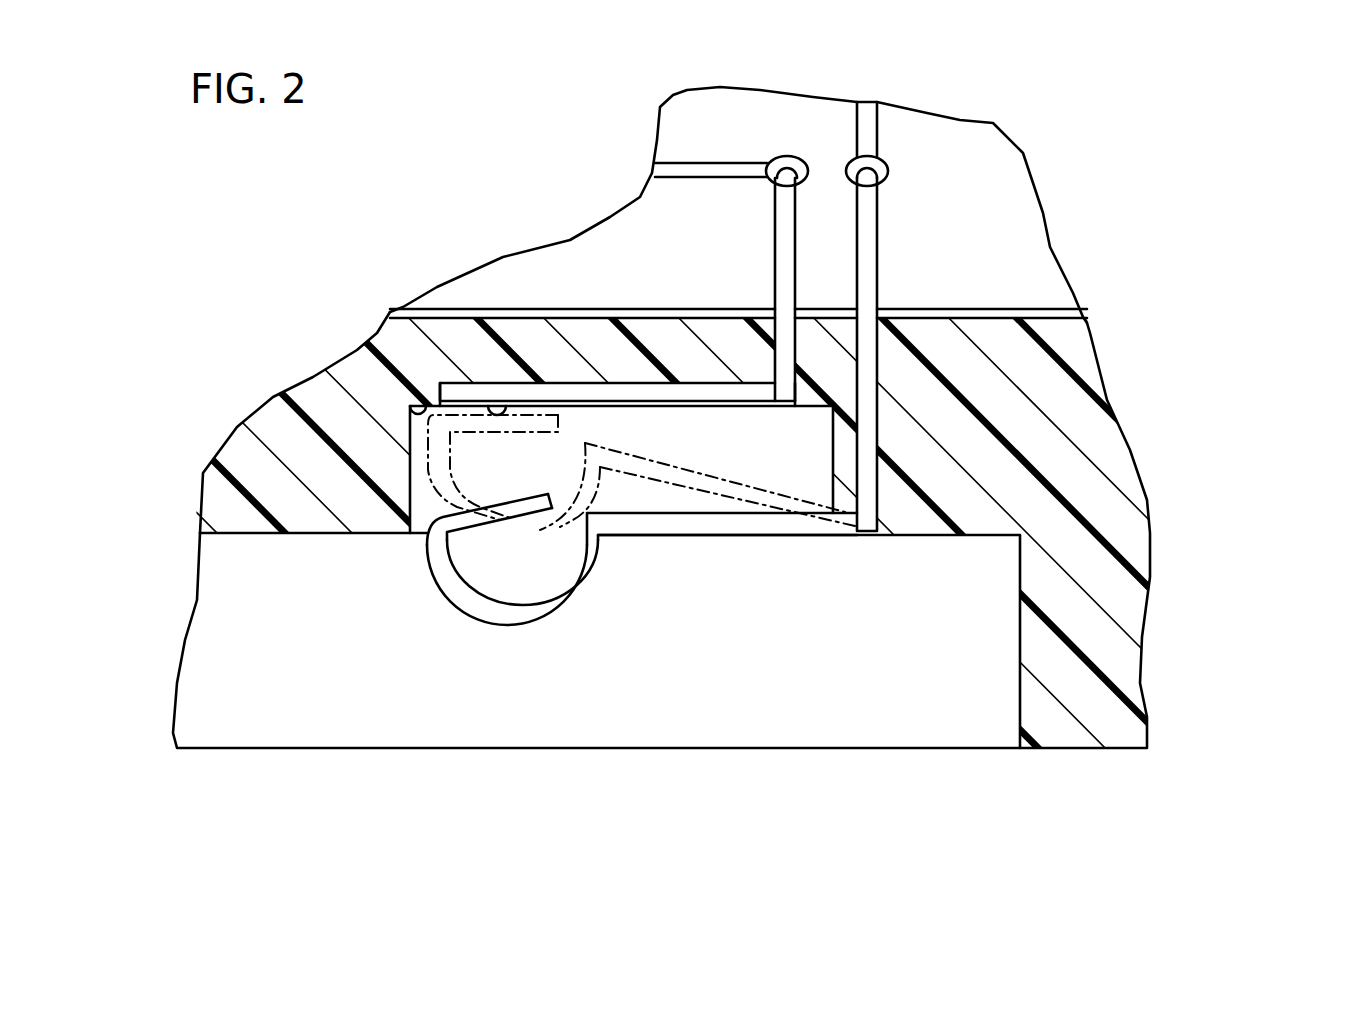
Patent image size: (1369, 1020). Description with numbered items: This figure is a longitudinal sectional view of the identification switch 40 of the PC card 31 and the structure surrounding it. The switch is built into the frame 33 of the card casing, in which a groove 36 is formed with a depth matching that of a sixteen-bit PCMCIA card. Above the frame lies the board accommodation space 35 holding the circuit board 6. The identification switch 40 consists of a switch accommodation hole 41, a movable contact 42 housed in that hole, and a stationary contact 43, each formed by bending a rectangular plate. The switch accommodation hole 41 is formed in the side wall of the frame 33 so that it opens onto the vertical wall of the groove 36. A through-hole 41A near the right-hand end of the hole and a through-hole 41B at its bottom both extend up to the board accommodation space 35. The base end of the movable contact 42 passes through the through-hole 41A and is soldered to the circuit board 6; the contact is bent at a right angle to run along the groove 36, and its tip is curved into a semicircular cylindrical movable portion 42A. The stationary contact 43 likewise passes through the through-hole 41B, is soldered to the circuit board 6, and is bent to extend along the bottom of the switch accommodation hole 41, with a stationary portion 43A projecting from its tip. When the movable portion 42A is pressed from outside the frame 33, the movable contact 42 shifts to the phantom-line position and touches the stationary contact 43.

The circuit board 6 is at (1013, 213).
The PC card 31 is at (1180, 535).
The frame 33 is at (1117, 666).
The board accommodation space 35 is at (700, 130).
The groove 36 is at (453, 713).
The identification switch 40 is at (669, 568).
The switch accommodation hole 41 is at (412, 408).
The through-hole 41A is at (863, 402).
The through-hole 41B is at (780, 337).
The movable contact 42 is at (780, 520).
The movable portion 42A is at (532, 613).
The stationary contact 43 is at (580, 393).
The stationary portion 43A is at (497, 408).